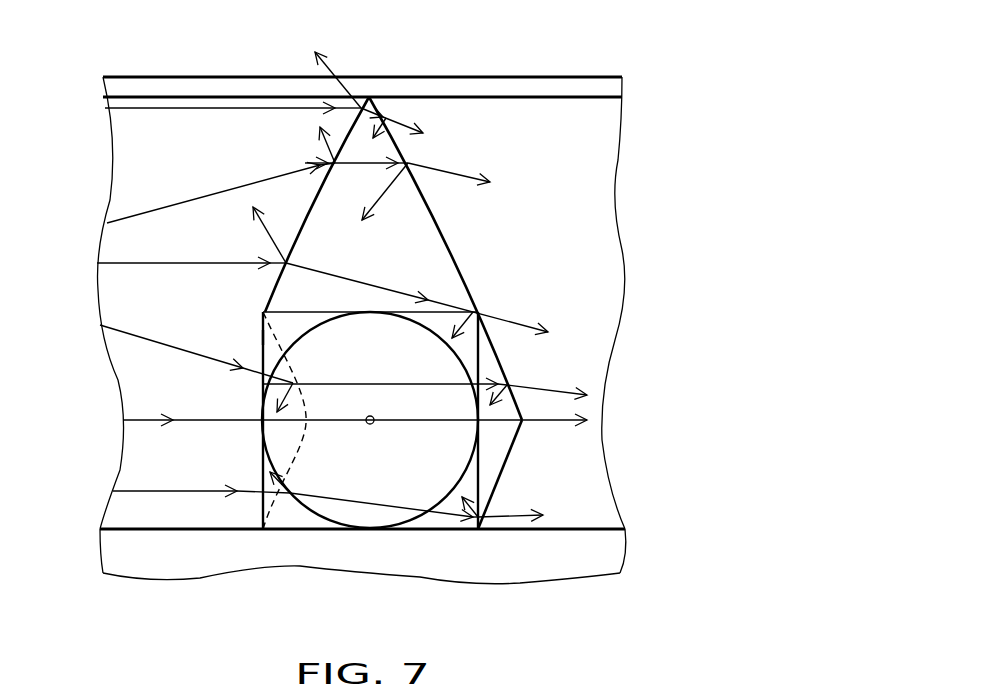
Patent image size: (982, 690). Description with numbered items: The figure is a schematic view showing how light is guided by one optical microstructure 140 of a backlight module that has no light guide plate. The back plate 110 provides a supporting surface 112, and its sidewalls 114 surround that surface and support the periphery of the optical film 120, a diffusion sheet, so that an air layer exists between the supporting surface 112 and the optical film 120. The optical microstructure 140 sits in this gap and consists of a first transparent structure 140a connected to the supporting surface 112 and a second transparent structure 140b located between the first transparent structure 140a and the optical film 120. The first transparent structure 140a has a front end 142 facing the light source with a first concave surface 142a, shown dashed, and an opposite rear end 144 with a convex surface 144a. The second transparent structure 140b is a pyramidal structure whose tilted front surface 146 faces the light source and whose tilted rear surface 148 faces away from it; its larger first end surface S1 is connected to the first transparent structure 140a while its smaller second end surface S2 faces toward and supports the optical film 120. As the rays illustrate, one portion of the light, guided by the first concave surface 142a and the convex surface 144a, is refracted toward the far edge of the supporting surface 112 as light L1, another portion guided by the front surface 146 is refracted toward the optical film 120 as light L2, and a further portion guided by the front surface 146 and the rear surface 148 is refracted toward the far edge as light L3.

The back plate 110 is at (585, 553).
The supporting surface 112 is at (170, 525).
The sidewalls 114 is at (582, 188).
The optical film 120 is at (612, 90).
The optical microstructure 140 is at (710, 241).
The first transparent structure 140a is at (363, 465).
The second transparent structure 140b is at (469, 213).
The front end 142 is at (261, 387).
The first concave surface 142a is at (295, 447).
The rear end 144 is at (484, 489).
The convex surface 144a is at (514, 453).
The front surface 146 is at (303, 212).
The rear surface 148 is at (410, 153).
The first end surface S1 is at (263, 338).
The second end surface S2 is at (371, 95).
The light L1 is at (513, 520).
The light L2 is at (322, 66).
The light L3 is at (405, 110).